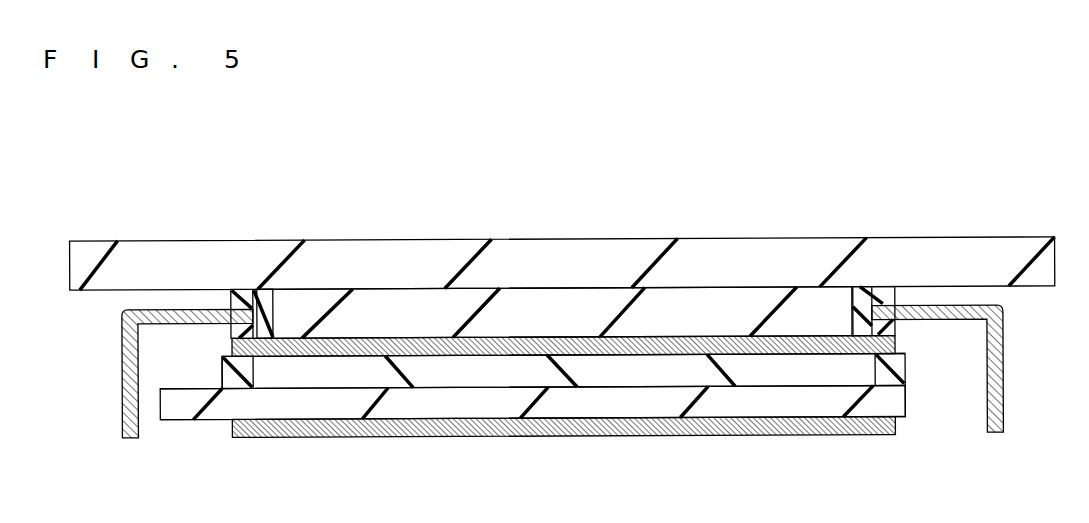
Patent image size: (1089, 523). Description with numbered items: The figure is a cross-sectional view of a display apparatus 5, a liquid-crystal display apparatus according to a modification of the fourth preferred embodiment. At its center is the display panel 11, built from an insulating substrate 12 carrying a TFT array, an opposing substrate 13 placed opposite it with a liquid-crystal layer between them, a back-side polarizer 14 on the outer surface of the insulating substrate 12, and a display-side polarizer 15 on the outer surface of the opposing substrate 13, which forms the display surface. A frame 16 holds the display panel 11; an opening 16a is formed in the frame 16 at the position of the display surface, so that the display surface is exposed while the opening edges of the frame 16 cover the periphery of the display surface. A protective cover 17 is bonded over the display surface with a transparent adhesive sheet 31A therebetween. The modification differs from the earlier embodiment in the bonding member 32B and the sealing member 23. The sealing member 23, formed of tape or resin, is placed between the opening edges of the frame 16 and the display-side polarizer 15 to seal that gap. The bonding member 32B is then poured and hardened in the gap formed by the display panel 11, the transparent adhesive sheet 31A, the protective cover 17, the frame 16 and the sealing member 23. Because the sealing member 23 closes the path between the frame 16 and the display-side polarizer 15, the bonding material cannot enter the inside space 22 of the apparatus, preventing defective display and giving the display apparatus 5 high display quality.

The display apparatus 5 is at (578, 148).
The display panel 11 is at (910, 335).
The insulating substrate 12 is at (637, 405).
The opposing substrate 13 is at (525, 368).
The back-side polarizer 14 is at (745, 437).
The display-side polarizer 15 is at (417, 358).
The frame 16 is at (121, 410).
The opening 16a is at (256, 312).
The protective cover 17 is at (627, 268).
The inside space 22 is at (152, 370).
The sealing member 23 is at (245, 358).
The transparent adhesive sheet 31A is at (512, 317).
The bonding member 32B is at (248, 300).